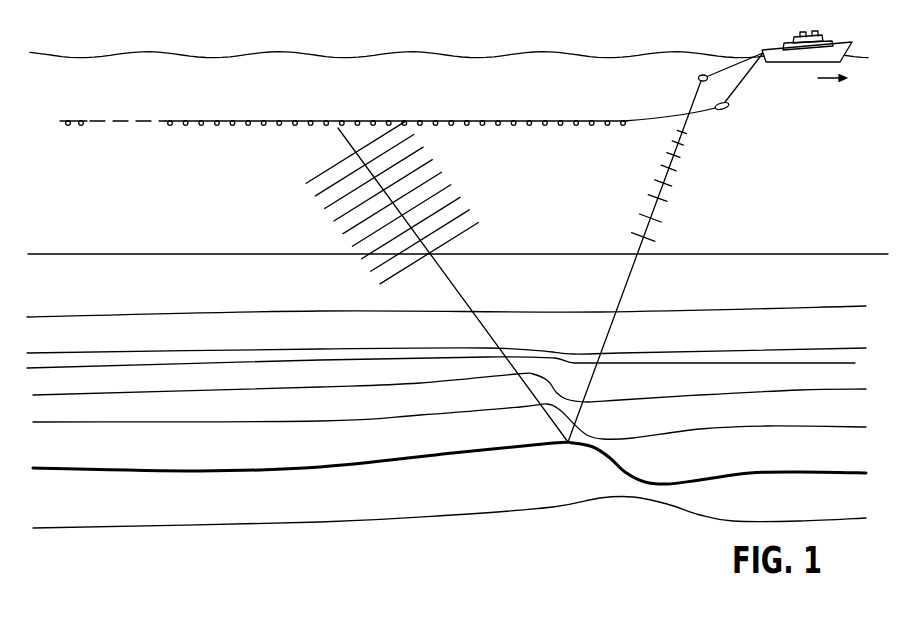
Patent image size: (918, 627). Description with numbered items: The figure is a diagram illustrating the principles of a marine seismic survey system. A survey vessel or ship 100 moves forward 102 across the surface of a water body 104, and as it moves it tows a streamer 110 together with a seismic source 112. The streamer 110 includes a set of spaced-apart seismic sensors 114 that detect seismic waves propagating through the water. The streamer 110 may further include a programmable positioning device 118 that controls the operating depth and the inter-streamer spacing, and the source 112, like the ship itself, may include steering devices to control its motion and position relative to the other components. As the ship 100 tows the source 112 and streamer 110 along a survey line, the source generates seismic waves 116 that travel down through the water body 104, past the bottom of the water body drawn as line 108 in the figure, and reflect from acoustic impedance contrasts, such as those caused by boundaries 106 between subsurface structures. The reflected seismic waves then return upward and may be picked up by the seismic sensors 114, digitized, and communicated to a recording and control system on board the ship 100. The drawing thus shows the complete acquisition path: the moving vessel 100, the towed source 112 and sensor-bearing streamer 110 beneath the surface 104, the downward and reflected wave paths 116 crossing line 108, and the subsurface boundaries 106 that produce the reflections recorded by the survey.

The survey vessel 100 is at (790, 42).
The forward direction 102 is at (834, 93).
The water body 104 is at (483, 58).
The boundaries between subsurface structures 106 is at (600, 453).
The water bottom (seafloor) 108 is at (786, 233).
The streamer 110 is at (740, 88).
The seismic source 112 is at (699, 77).
The seismic sensors 114 is at (201, 125).
The seismic waves 116 is at (658, 203).
The programmable positioning device 118 is at (726, 114).